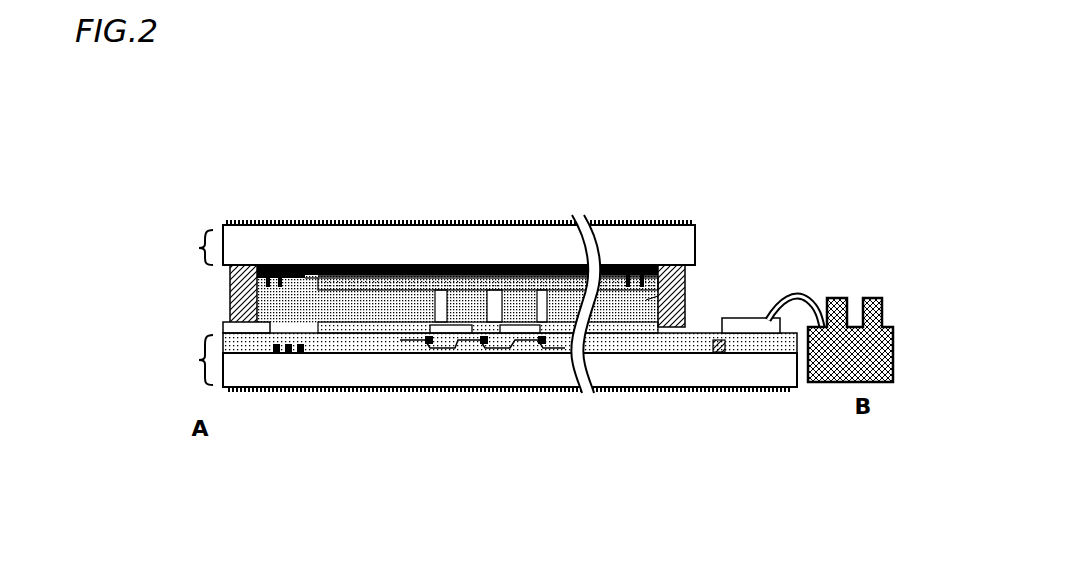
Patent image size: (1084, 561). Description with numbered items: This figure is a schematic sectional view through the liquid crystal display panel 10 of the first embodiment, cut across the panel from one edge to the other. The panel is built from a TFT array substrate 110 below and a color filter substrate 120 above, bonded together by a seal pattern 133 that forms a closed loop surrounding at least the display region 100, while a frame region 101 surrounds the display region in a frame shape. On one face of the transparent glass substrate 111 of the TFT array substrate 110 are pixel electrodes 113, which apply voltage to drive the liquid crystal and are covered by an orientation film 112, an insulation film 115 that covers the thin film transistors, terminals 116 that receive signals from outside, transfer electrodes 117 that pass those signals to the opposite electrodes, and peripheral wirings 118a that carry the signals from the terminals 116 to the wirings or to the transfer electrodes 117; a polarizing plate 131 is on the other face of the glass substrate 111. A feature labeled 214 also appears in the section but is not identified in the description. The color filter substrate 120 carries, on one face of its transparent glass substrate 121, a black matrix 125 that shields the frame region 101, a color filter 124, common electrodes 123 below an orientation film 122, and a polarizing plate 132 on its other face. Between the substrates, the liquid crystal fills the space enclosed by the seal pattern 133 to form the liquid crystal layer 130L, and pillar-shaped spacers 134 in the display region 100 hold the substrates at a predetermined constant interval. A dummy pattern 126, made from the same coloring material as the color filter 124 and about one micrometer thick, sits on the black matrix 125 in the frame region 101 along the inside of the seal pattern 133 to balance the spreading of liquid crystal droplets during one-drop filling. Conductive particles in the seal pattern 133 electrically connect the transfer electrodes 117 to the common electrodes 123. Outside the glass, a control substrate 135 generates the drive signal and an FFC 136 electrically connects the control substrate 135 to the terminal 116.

The liquid crystal display panel 10 is at (691, 90).
The display region 100 is at (588, 217).
The frame region 101 is at (232, 217).
The TFT array substrate 110 is at (188, 371).
The glass substrate 111 is at (633, 370).
The orientation film 112 is at (362, 335).
The pixel electrodes 113 is at (540, 342).
The insulation film 115 is at (343, 340).
The terminals 116 is at (770, 334).
The transfer electrodes 117 is at (247, 335).
The peripheral wirings 118a is at (288, 355).
The color filter substrate 120 is at (185, 259).
The glass substrate 121 is at (226, 210).
The orientation film 122 is at (330, 268).
The common electrodes 123 is at (462, 264).
The color filter 124 is at (520, 278).
The black matrix 125 is at (302, 265).
The dummy pattern 126 is at (625, 264).
The liquid crystal layer 130L is at (656, 298).
The polarizing plate 131 is at (677, 393).
The polarizing plate 132 is at (250, 262).
The seal pattern 133 is at (688, 300).
The pillar-shaped spacers 134 is at (405, 264).
The control substrate 135 is at (872, 298).
The FFC 136 is at (789, 300).
The pixel electrode 214 is at (510, 333).